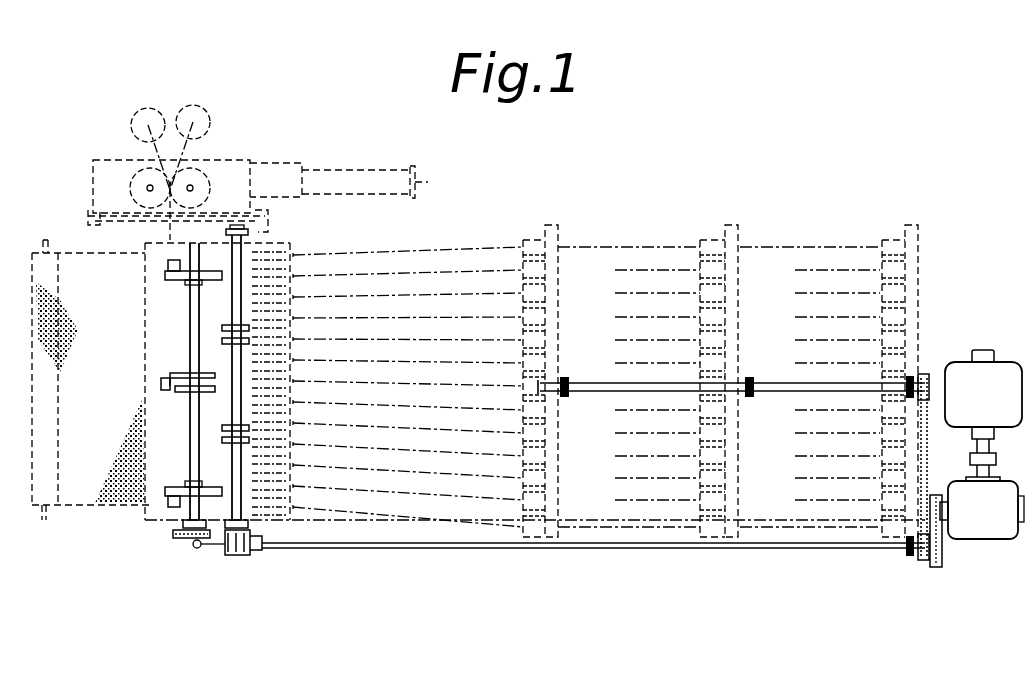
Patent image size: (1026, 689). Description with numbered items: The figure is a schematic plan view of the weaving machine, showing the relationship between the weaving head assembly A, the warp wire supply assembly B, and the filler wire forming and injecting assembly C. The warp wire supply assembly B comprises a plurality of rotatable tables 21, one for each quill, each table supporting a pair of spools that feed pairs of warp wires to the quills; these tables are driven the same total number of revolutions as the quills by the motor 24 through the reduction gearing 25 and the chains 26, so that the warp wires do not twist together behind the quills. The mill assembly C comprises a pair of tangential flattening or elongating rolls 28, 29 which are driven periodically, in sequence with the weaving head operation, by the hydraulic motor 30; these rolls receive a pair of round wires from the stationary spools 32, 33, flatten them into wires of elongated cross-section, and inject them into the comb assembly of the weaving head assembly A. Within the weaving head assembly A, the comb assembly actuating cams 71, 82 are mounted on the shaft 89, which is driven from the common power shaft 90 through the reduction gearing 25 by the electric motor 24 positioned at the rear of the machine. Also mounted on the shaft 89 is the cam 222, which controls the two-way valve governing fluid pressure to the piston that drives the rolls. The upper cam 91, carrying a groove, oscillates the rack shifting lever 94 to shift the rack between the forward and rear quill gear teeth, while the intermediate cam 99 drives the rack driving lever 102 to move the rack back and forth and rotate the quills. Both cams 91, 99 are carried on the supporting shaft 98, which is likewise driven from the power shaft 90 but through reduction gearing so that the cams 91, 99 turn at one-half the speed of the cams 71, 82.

The rotatable table 21 is at (521, 239).
The motor 24 is at (983, 415).
The reduction gearing 25 is at (977, 524).
The chains 26 is at (921, 472).
The flattening roll 28 is at (130, 188).
The flattening roll 29 is at (210, 186).
The hydraulic motor 30 is at (332, 160).
The stationary spool 32 is at (146, 108).
The stationary spool 33 is at (207, 112).
The actuating cam 71 is at (222, 328).
The actuating cam 82 is at (222, 341).
The shaft 89 is at (238, 508).
The common power shaft 90 is at (463, 549).
The upper cam 91 is at (165, 277).
The rack shifting lever 94 is at (168, 265).
The supporting shaft 98 is at (192, 300).
The intermediate cam 99 is at (176, 390).
The rack driving lever 102 is at (161, 384).
The cam 222 is at (226, 232).
The weaving head assembly A is at (158, 530).
The warp wire supply assembly B is at (680, 533).
The filler wire forming and injecting assembly C is at (113, 155).